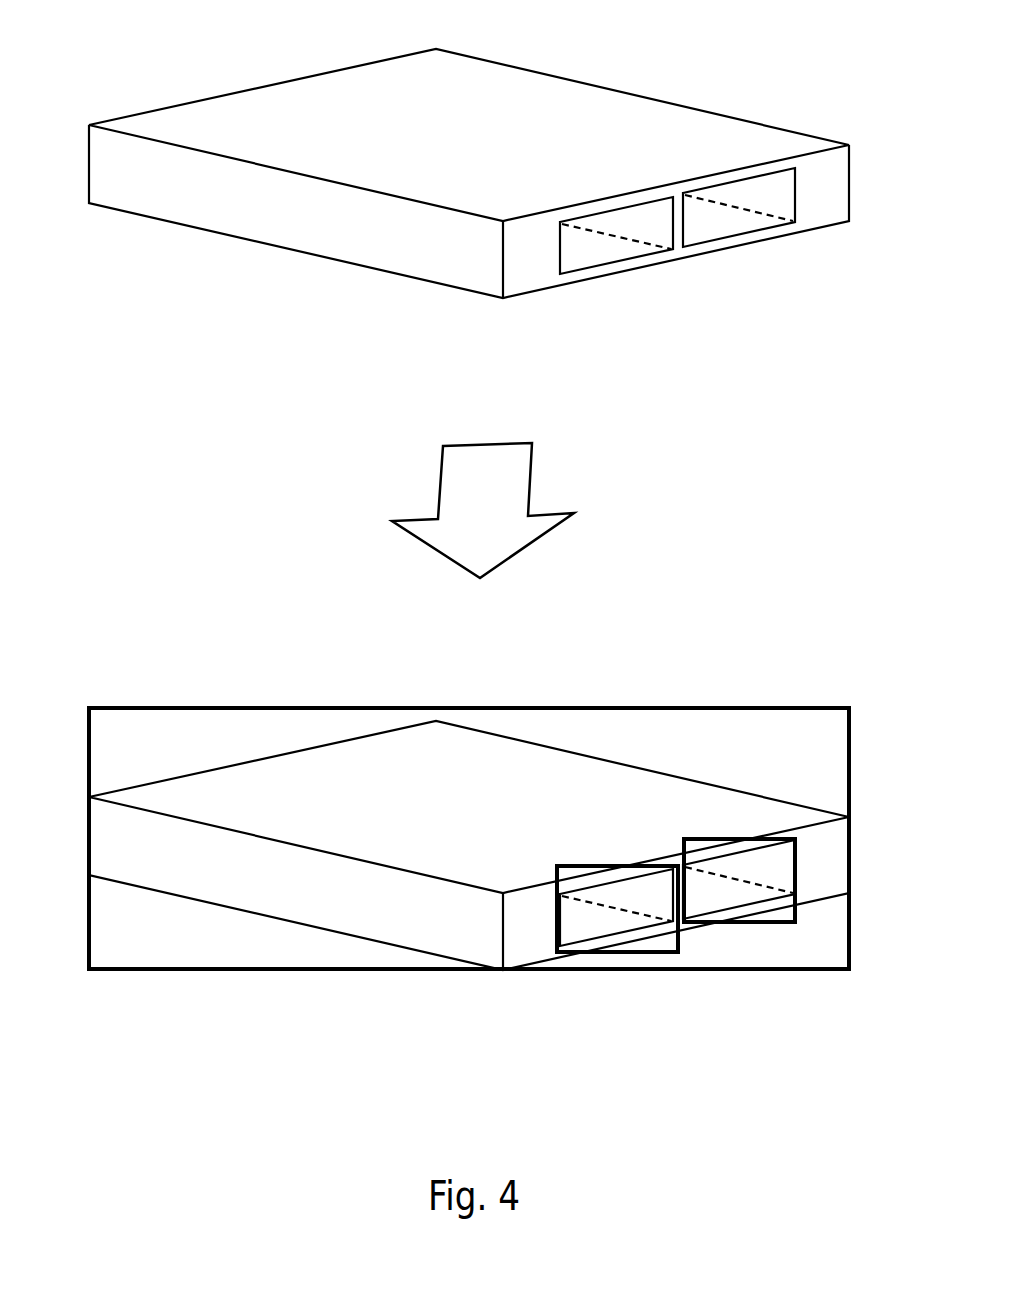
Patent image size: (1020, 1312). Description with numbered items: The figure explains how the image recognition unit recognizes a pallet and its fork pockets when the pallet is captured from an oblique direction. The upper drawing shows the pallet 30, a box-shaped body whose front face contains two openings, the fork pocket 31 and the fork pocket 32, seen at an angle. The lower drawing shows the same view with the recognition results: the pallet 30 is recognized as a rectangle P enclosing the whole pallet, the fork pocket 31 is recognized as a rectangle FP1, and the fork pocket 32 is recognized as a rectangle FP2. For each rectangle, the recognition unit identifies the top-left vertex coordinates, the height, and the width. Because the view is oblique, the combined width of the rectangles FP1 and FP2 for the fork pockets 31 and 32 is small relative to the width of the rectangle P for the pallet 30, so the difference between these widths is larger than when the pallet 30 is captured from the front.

The pallet 30 is at (523, 75).
The fork pocket 31 is at (591, 244).
The fork pocket 32 is at (723, 218).
The rectangle P is at (850, 754).
The rectangle FP1 is at (573, 865).
The rectangle FP2 is at (735, 840).